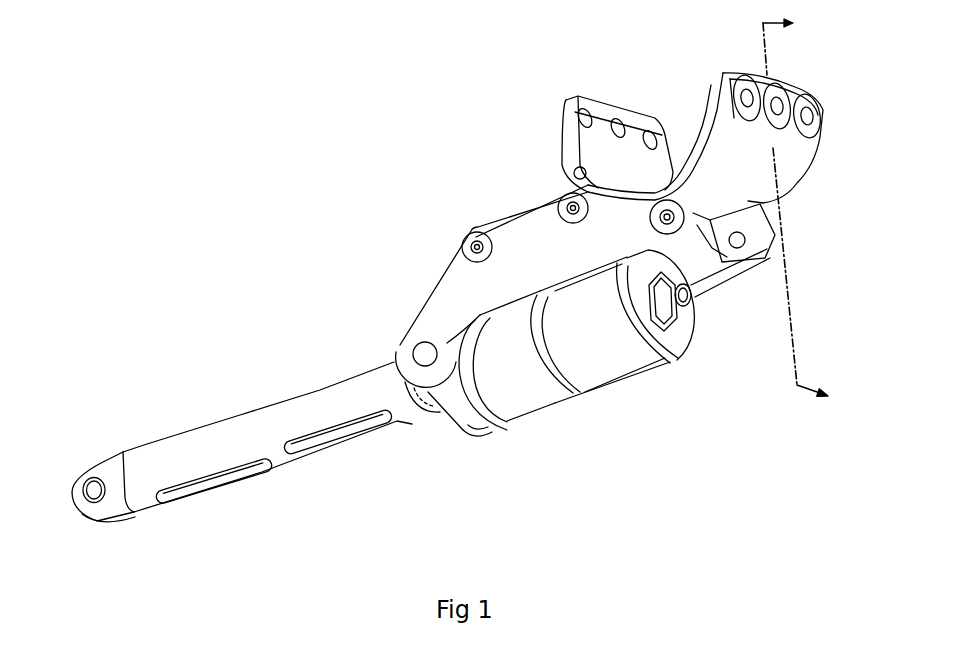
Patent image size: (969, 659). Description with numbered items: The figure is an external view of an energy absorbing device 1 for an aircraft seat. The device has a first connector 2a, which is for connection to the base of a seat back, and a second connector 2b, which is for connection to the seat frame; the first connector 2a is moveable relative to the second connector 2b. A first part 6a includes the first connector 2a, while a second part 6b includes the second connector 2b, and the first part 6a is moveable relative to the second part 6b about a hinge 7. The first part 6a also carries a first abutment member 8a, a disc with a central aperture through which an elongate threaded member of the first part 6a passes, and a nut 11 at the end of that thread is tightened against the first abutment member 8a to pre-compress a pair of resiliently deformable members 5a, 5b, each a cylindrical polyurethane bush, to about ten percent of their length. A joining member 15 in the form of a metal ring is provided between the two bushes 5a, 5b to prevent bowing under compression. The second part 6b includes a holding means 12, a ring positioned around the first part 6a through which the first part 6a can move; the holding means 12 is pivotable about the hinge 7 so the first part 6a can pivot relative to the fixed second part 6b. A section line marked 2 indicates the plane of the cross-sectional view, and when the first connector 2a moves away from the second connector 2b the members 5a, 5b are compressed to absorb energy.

The energy absorbing device 1 is at (270, 192).
The section line 2 is at (805, 216).
The first connector 2a is at (85, 455).
The second connector 2b is at (557, 95).
The first resiliently deformable member 5a is at (530, 395).
The second resiliently deformable member 5b is at (623, 363).
The first part 6a is at (268, 420).
The second part 6b is at (520, 230).
The hinge 7 is at (413, 350).
The first abutment member 8a is at (680, 342).
The nut 11 is at (693, 317).
The holding means 12 is at (483, 432).
The joining member 15 is at (573, 393).